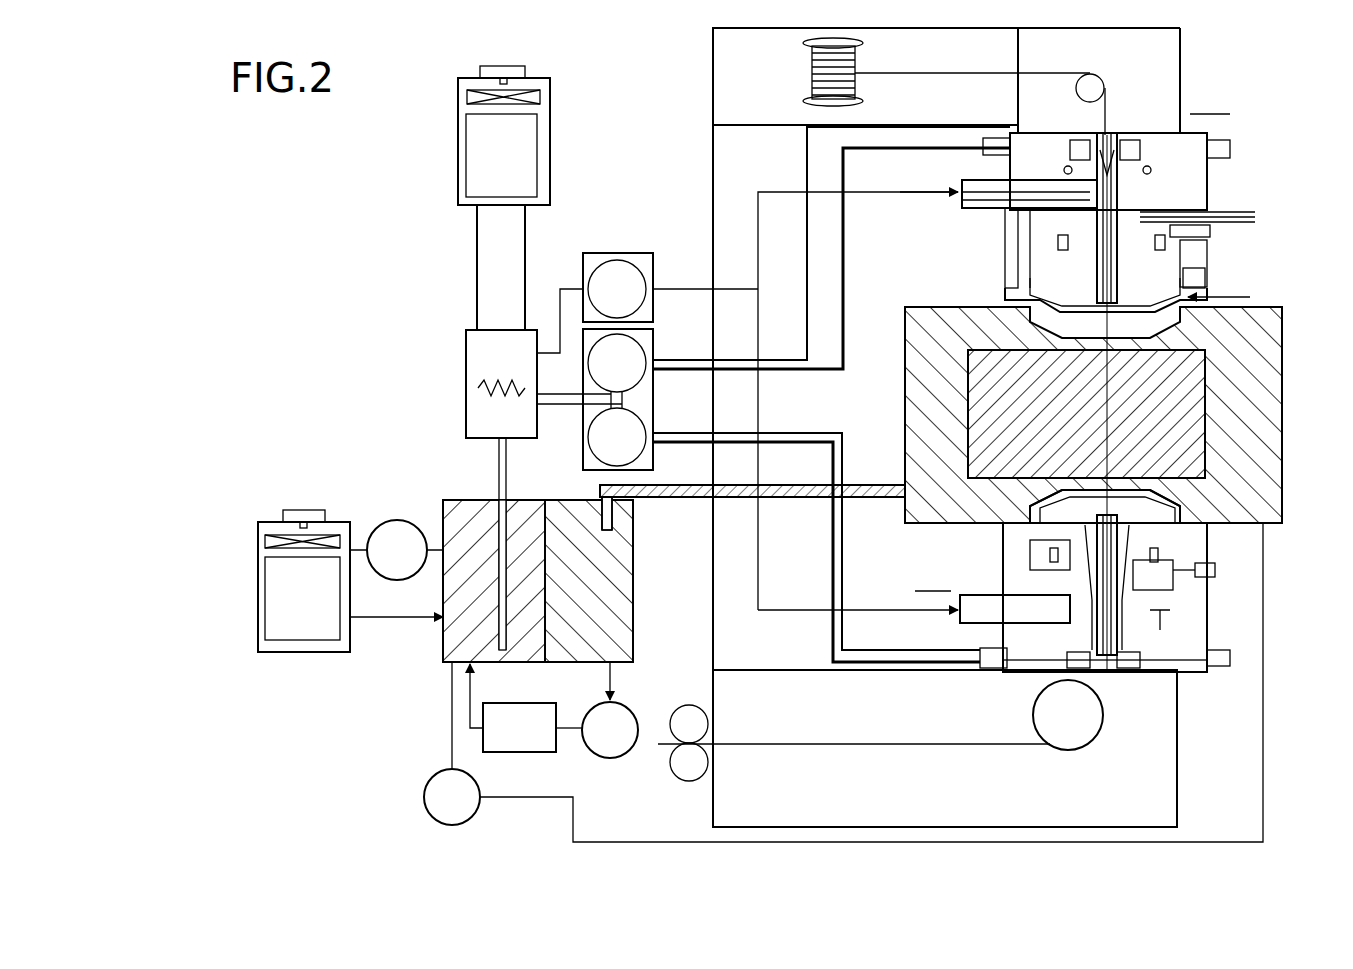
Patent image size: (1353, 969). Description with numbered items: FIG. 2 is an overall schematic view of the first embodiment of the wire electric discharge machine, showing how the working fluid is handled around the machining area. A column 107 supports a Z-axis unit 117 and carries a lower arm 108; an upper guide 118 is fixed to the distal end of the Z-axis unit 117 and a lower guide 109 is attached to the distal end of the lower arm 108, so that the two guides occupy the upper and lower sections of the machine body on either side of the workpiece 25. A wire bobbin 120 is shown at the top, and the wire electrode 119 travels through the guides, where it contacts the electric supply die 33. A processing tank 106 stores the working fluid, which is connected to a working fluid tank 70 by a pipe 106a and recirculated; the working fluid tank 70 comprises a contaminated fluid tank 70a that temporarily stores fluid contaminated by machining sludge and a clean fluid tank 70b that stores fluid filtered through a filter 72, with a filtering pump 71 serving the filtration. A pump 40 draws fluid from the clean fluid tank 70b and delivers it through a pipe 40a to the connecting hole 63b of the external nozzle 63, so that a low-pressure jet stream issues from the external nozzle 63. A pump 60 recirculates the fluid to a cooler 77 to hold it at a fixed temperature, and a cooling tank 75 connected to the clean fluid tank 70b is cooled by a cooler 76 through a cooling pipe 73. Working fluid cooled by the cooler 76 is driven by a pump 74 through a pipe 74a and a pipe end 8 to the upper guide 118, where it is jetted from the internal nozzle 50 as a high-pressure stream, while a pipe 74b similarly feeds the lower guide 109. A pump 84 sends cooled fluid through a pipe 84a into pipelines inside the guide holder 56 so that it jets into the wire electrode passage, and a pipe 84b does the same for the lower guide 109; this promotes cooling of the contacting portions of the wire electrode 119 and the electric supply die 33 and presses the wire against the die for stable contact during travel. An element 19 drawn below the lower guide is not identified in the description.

The pipe end 8 is at (998, 135).
The roller 19 is at (1090, 717).
The workpiece 25 is at (977, 346).
The electric supply die 33 is at (1240, 214).
The pump 40 is at (424, 801).
The pipe 40a is at (1263, 575).
The internal nozzle 50 is at (1200, 268).
The guide holder 56 is at (972, 180).
The pump 60 is at (400, 520).
The external nozzle 63 is at (1195, 285).
The connecting hole 63b is at (1244, 288).
The working fluid tank 70 is at (633, 585).
The contaminated fluid tank 70a is at (633, 636).
The clean fluid tank 70b is at (443, 636).
The filtering pump 71 is at (610, 758).
The filter 72 is at (520, 752).
The cooling pipe 73 is at (477, 303).
The pump 74 is at (655, 344).
The pipe 74a is at (894, 140).
The pipe 74b is at (885, 667).
The cooling tank 75 is at (467, 421).
The cooler 76 is at (462, 176).
The cooler 77 is at (330, 660).
The pump 84 is at (655, 268).
The pipe 84a is at (773, 185).
The pipe 84b is at (771, 615).
The processing tank 106 is at (928, 306).
The pipe 106a is at (672, 500).
The column 107 is at (713, 182).
The lower arm 108 is at (1165, 807).
The lower guide 109 is at (936, 578).
The Z-axis unit 117 is at (1168, 52).
The upper guide 118 is at (1211, 101).
The wire electrode 119 is at (1043, 73).
The wire bobbin 120 is at (812, 77).